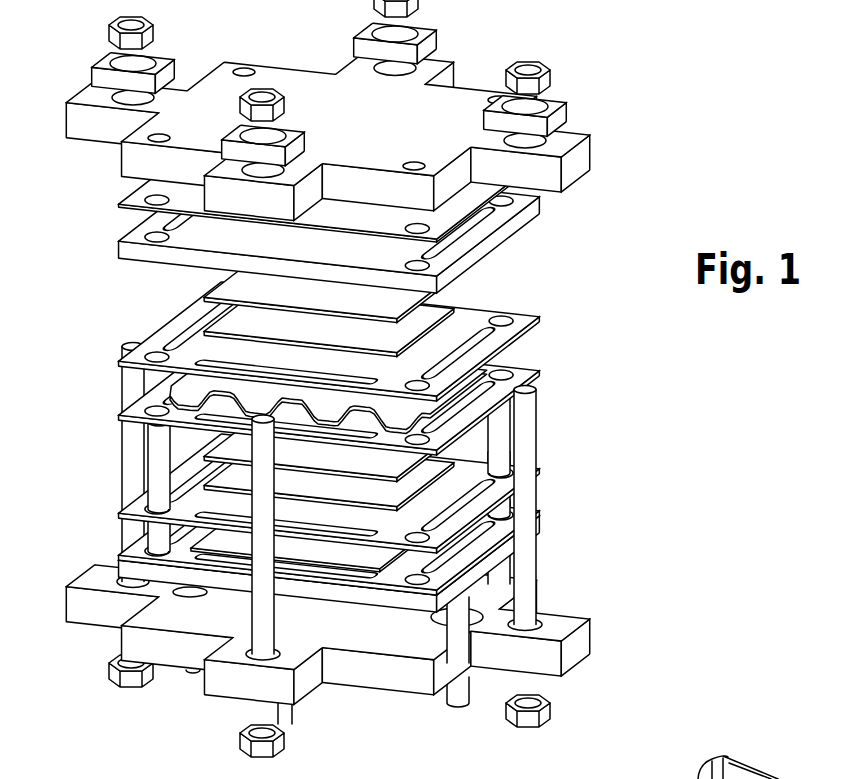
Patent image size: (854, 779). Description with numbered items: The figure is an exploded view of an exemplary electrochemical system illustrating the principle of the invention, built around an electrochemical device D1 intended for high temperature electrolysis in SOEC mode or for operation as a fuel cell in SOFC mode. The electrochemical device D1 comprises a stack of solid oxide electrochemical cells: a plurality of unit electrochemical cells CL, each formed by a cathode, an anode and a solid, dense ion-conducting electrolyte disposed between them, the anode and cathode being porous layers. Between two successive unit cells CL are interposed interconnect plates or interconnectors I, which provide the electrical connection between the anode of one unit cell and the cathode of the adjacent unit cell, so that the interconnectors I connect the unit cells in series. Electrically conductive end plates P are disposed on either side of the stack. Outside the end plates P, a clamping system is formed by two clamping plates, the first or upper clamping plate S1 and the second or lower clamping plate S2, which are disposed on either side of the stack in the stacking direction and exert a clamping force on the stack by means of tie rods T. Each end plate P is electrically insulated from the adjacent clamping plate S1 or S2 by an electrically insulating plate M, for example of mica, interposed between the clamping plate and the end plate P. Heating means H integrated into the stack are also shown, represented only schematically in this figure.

The first clamping plate S1 is at (580, 160).
The second clamping plate S2 is at (252, 683).
The electrically insulating plate M is at (157, 184).
The end plate P is at (515, 222).
The unit electrochemical cell CL is at (242, 324).
The electrochemical device D1 is at (328, 453).
The heating means H is at (548, 357).
The interconnect plate I is at (200, 417).
The tie rod T is at (530, 523).